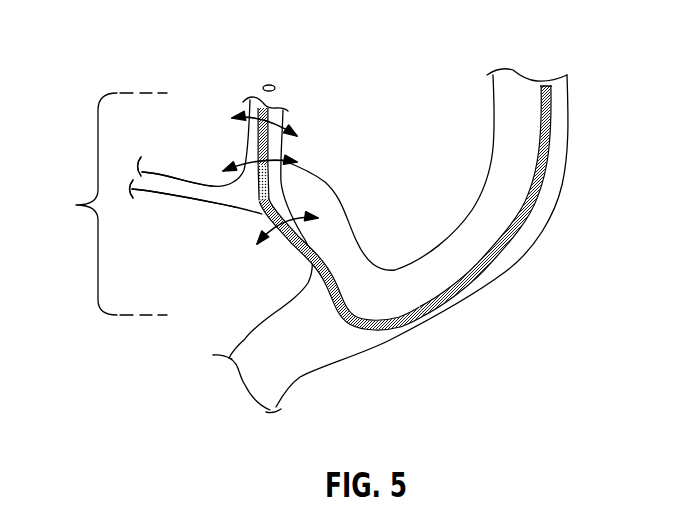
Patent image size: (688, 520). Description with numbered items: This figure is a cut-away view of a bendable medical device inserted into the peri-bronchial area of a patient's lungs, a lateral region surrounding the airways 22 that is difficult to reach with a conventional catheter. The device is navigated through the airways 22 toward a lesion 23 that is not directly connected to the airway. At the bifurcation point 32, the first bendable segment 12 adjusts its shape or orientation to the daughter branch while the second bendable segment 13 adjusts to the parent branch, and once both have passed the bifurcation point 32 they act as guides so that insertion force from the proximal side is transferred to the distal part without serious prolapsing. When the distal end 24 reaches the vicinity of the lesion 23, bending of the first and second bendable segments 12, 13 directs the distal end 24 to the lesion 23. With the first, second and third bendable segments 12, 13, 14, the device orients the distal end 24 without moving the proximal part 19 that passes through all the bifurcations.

The first bendable segment 12 is at (257, 138).
The second bendable segment 13 is at (268, 197).
The third bendable segment 14 is at (332, 297).
The proximal part 19 is at (551, 113).
The airways 22 is at (505, 129).
The lesion 23 is at (266, 84).
The distal end 24 is at (105, 204).
The bifurcation point 32 is at (245, 198).